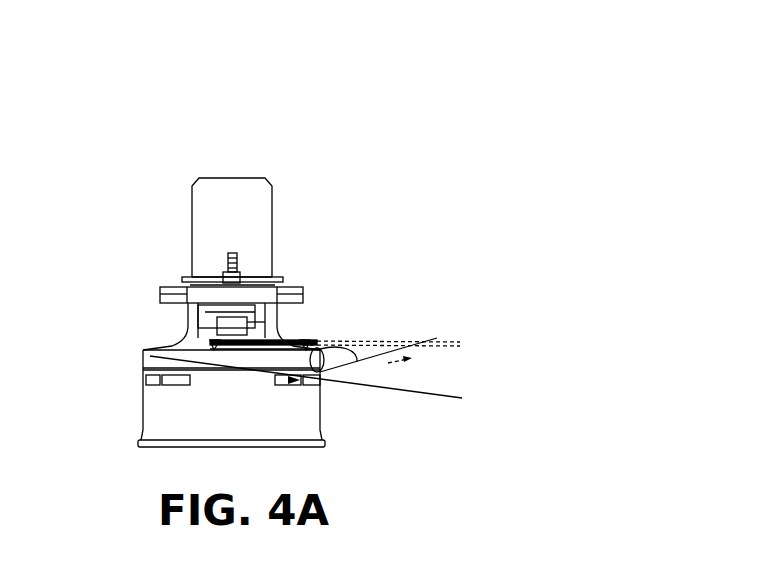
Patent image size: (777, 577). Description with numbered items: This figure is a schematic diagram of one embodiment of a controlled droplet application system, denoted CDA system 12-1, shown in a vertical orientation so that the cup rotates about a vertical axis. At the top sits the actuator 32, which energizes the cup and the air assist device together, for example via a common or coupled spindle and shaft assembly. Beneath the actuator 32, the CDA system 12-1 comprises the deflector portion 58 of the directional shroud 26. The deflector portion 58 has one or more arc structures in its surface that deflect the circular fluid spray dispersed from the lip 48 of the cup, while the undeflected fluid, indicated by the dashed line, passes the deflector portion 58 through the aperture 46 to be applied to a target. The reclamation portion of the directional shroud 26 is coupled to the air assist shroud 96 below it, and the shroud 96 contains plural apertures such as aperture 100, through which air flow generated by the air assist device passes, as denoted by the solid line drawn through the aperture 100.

The CDA system 12-1 is at (403, 187).
The actuator 32 is at (192, 192).
The lip 48 is at (242, 340).
The aperture 46 is at (283, 342).
The deflector portion 58 is at (172, 333).
The directional shroud 26 is at (175, 350).
The aperture 100 is at (150, 356).
The air assist shroud 96 is at (143, 411).